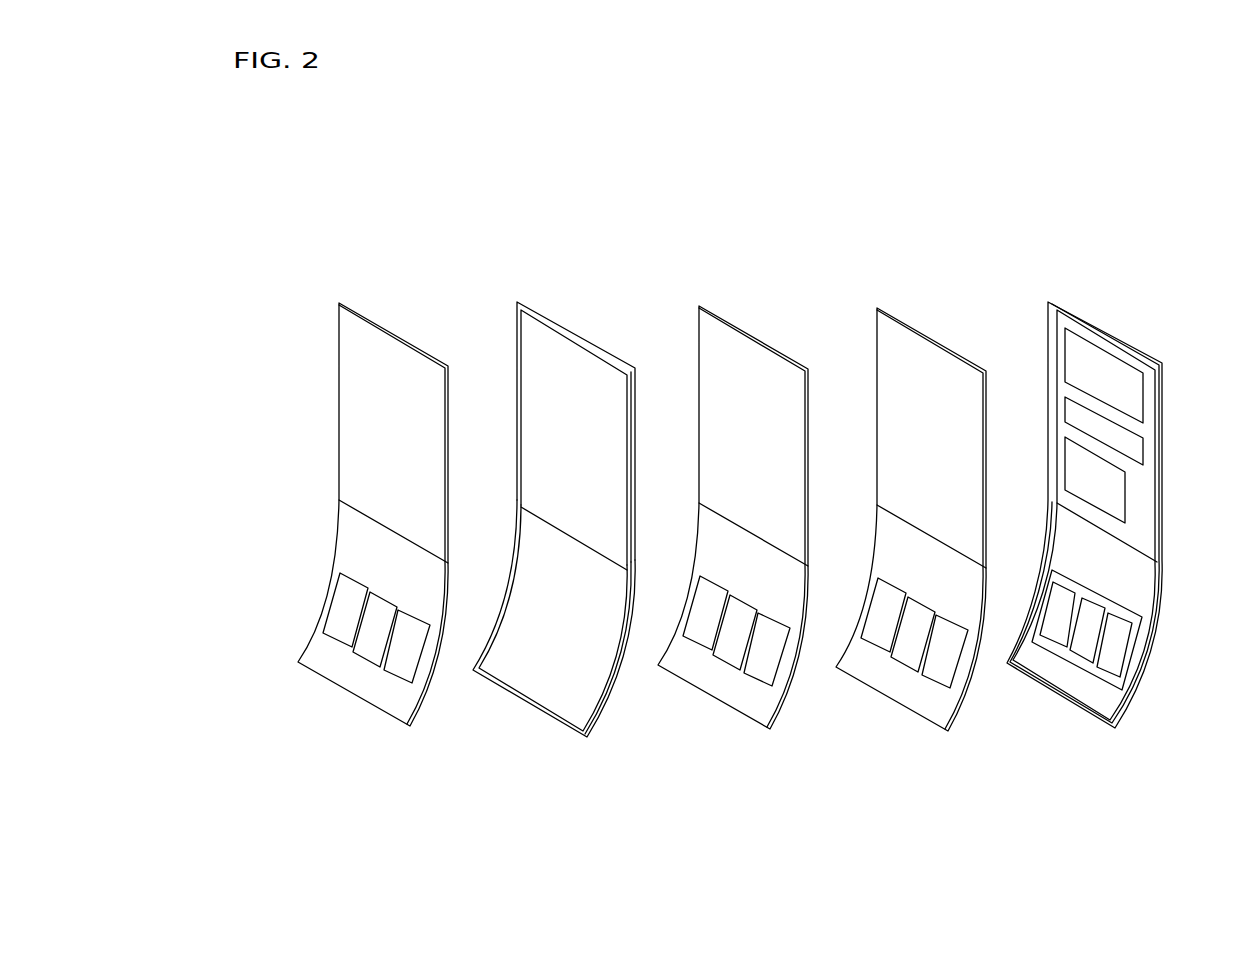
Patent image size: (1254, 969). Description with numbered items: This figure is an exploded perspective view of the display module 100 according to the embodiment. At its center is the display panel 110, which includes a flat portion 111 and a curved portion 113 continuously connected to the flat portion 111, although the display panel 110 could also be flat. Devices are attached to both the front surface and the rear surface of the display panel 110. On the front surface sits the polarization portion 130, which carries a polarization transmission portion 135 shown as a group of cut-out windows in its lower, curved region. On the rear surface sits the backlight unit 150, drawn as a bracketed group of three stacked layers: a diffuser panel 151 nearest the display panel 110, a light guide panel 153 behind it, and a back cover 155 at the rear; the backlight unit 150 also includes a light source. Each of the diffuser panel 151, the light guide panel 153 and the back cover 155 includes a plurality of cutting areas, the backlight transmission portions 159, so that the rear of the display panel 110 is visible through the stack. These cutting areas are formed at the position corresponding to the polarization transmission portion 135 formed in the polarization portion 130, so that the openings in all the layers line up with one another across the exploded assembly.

The display device 100 is at (1150, 197).
The display panel 110 is at (527, 675).
The flat portion 111 is at (535, 343).
The curved portion 113 is at (517, 588).
The polarization portion 130 is at (347, 456).
The polarization transmission portion 135 is at (362, 652).
The backlight unit 150 is at (700, 283).
The diffuser panel 151 is at (747, 707).
The light guide panel 153 is at (933, 707).
The back cover 155 is at (1108, 708).
The backlight transmission portions 159 is at (1083, 645).